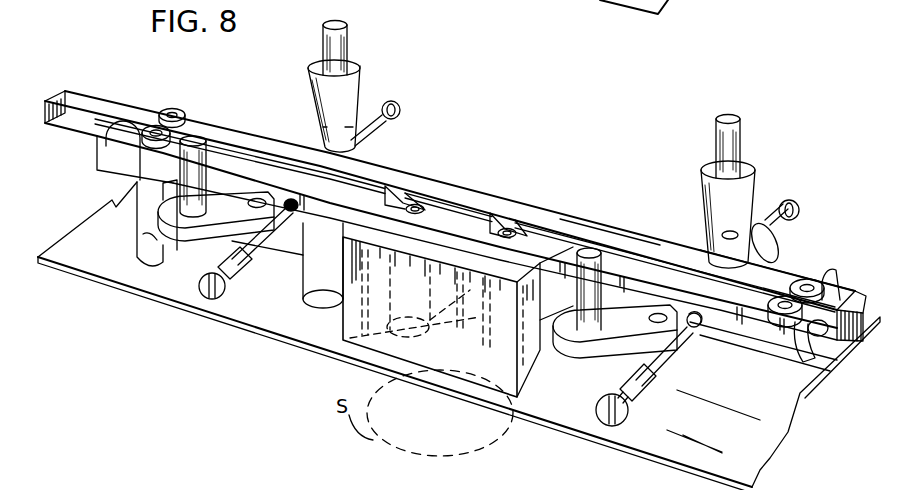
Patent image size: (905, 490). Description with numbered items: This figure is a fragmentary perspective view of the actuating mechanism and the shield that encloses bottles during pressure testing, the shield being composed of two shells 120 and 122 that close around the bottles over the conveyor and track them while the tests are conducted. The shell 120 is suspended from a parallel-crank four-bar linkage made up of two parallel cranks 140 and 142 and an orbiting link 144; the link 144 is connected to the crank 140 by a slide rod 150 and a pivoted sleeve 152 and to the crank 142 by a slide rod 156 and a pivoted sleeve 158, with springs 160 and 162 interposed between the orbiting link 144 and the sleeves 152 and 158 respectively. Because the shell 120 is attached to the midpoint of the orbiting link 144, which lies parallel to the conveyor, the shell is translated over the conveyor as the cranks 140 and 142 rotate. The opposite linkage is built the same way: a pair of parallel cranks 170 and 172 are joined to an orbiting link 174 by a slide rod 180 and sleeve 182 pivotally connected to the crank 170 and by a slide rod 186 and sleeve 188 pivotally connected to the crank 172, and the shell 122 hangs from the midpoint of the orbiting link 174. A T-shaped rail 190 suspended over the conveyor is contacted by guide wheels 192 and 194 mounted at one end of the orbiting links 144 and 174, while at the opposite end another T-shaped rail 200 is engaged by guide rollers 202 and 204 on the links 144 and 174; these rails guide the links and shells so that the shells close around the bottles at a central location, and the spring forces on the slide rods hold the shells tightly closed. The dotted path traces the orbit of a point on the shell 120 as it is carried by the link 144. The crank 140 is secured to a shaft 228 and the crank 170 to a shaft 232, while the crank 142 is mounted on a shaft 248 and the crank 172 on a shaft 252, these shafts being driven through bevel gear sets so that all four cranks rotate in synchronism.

The shell 120 is at (337, 358).
The shell 122 is at (552, 306).
The crank 140 is at (580, 353).
The crank 142 is at (140, 290).
The orbiting link 144 is at (773, 345).
The slide rod 150 is at (607, 414).
The pivoted sleeve 152 is at (664, 372).
The slide rod 156 is at (213, 300).
The pivoted sleeve 158 is at (270, 247).
The spring 160 is at (690, 328).
The spring 162 is at (292, 203).
The crank 170 is at (748, 170).
The crank 172 is at (345, 80).
The orbiting link 174 is at (453, 187).
The slide rod 180 is at (803, 200).
The sleeve 182 is at (771, 236).
The slide rod 186 is at (400, 107).
The sleeve 188 is at (383, 140).
The T-shaped rail 190 is at (863, 310).
The guide wheel 192 is at (800, 372).
The guide wheel 194 is at (830, 287).
The T-shaped rail 200 is at (103, 97).
The guide roller 202 is at (113, 133).
The guide roller 204 is at (173, 110).
The shaft 228 is at (613, 247).
The shaft 232 is at (723, 143).
The shaft 248 is at (195, 140).
The shaft 252 is at (340, 43).